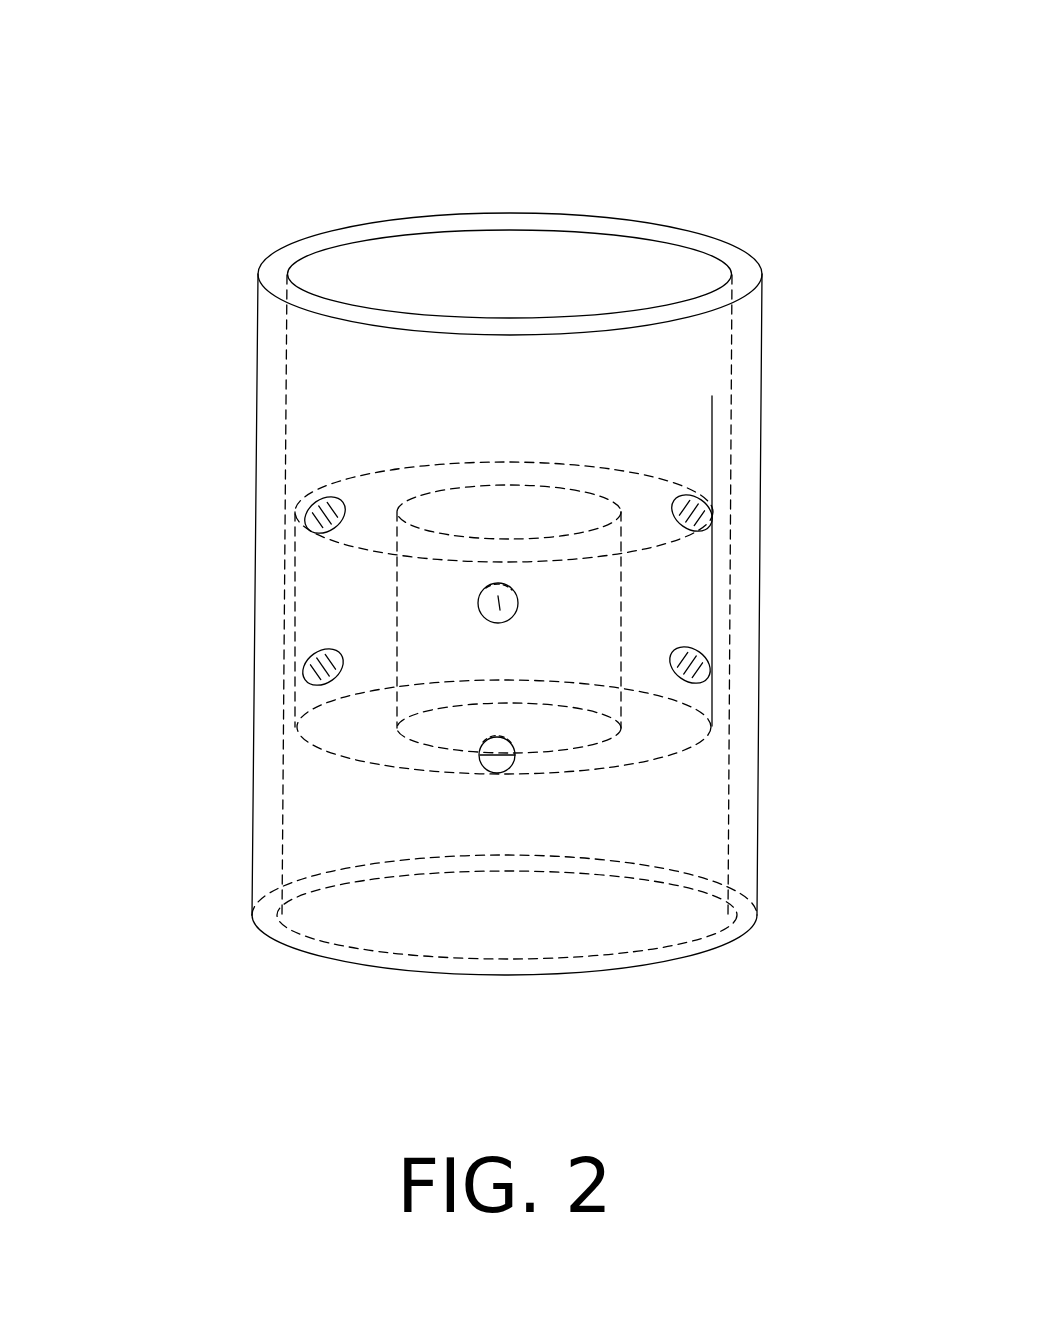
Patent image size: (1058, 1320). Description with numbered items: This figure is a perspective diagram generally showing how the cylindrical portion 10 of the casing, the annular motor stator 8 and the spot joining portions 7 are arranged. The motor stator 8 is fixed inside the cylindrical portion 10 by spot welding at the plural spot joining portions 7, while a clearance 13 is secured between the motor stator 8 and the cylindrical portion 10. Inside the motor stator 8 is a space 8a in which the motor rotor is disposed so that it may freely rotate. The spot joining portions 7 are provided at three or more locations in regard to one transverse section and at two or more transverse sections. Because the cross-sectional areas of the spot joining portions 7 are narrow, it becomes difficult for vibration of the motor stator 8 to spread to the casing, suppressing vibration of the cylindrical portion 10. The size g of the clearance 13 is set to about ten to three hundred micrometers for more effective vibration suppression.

The cylindrical portion 10 is at (760, 203).
The motor stator 8 is at (336, 465).
The space 8a is at (447, 508).
The spot joining portions 7 is at (497, 583).
The clearance 13 is at (715, 511).
The size of the clearance g is at (822, 440).